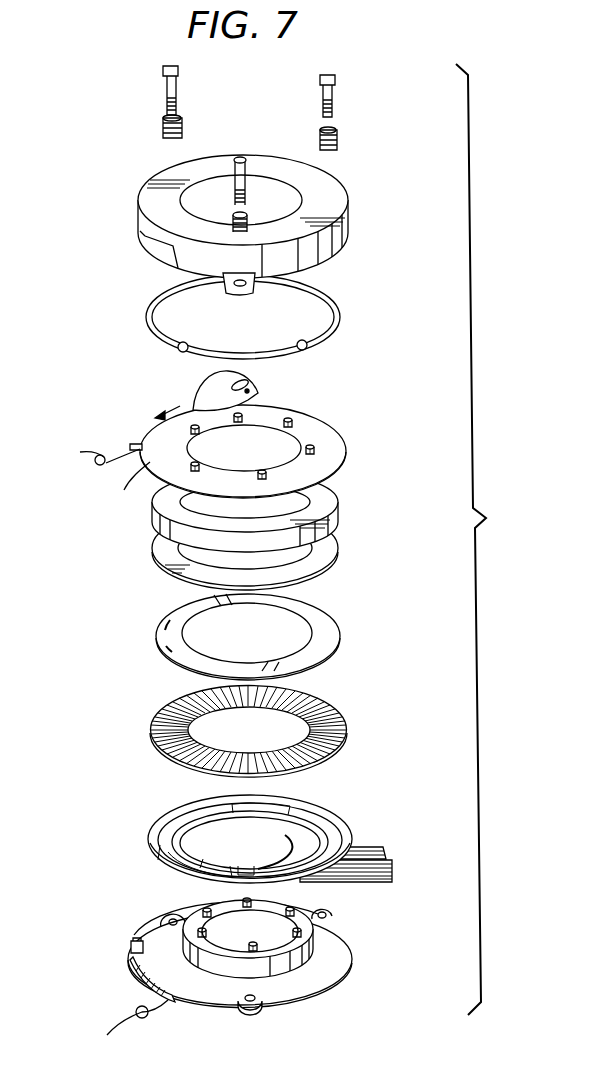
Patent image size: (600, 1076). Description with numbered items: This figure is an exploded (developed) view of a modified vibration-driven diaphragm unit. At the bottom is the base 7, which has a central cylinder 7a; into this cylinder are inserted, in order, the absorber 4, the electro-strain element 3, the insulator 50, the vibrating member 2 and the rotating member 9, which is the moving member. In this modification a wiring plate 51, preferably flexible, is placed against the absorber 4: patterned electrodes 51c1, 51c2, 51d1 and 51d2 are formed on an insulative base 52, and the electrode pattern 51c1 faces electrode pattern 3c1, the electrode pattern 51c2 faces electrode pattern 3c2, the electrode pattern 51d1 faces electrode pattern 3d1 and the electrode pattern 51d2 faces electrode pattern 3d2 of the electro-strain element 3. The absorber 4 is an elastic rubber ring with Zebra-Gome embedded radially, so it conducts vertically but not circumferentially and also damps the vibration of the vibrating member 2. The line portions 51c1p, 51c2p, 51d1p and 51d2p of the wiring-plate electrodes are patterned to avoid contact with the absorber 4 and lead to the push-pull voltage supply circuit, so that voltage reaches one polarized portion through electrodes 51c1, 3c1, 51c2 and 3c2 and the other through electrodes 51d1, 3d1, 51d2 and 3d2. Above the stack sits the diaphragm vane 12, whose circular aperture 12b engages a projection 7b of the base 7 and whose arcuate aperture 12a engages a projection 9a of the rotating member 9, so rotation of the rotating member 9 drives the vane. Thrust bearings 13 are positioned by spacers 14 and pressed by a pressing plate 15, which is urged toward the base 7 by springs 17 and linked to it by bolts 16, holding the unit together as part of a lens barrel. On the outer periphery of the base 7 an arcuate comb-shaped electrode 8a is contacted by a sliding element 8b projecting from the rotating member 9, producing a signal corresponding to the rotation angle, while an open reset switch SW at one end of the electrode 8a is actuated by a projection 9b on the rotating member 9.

The vibrating member 2 is at (330, 500).
The electro-strain element 3 is at (340, 627).
The electrode pattern 3c1 is at (305, 617).
The electrode pattern 3c2 is at (330, 656).
The electrode pattern 3d1 is at (168, 650).
The electrode pattern 3d2 is at (175, 625).
The absorber 4 is at (335, 720).
The base 7 is at (332, 988).
The central cylinder 7a is at (310, 952).
The projection 7b is at (292, 907).
The arcuate comb-shaped electrode 8a is at (138, 968).
The sliding element 8b is at (124, 490).
The rotating member 9 is at (340, 447).
The projection 9a is at (292, 420).
The projection 9b is at (135, 445).
The diaphragm vane 12 is at (205, 387).
The arcuate aperture 12a is at (250, 382).
The circular aperture 12b is at (252, 391).
The thrust bearings 13 is at (308, 348).
The spacers 14 is at (340, 302).
The pressing plate 15 is at (345, 245).
The bolts 16 is at (166, 92).
The springs 17 is at (163, 128).
The insulator 50 is at (330, 548).
The wiring plate 51 is at (165, 808).
The electrode pattern 51c1 is at (268, 868).
The electrode pattern 51c2 is at (337, 825).
The conductor lead 51c1p is at (388, 868).
The conductor lead 51c2p is at (384, 858).
The electrode pattern 51d1 is at (243, 868).
The electrode pattern 51d2 is at (163, 835).
The terminal lead 51d1p is at (392, 878).
The terminal lead 51d2p is at (325, 805).
The insulative base 52 is at (158, 862).
The open reset switch SW is at (140, 940).